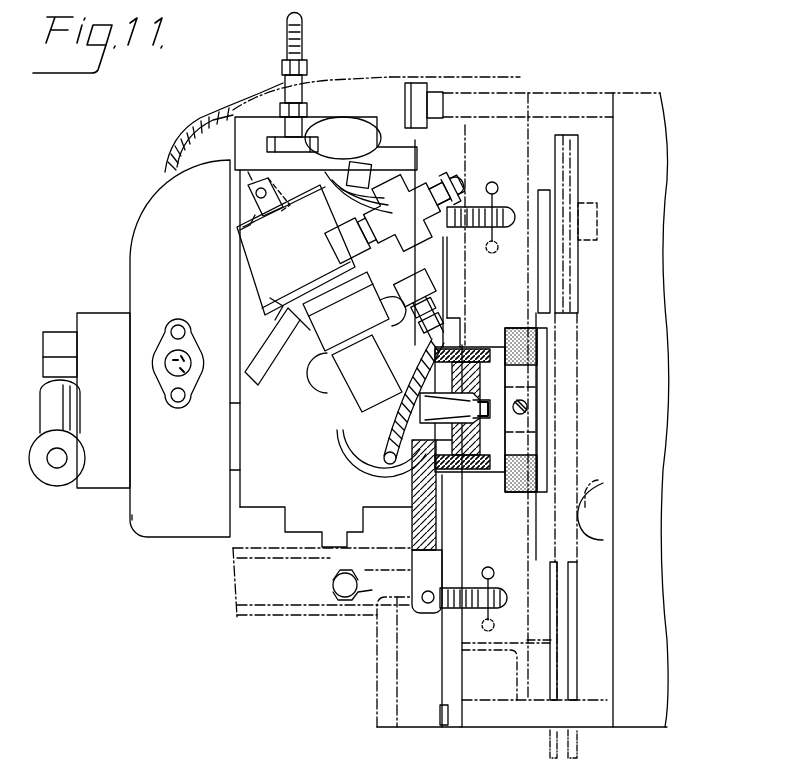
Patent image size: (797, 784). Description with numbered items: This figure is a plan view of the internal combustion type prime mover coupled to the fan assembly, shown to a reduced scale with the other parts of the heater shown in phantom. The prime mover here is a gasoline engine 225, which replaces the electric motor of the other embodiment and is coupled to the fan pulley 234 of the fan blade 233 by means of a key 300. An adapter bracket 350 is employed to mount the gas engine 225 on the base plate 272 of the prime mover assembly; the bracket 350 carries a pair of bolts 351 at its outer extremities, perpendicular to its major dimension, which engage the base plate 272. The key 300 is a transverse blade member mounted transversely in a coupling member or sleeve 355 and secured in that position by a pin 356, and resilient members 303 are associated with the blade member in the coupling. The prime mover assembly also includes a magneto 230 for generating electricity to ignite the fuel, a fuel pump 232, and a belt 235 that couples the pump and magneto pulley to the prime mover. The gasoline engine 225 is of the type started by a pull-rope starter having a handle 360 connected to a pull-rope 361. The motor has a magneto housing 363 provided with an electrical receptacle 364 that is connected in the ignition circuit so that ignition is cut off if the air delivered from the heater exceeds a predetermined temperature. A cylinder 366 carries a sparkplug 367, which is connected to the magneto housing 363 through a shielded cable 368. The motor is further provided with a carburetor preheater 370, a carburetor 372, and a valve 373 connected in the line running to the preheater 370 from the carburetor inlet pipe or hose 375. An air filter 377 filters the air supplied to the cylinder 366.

The gasoline engine 225 is at (148, 530).
The magneto 230 is at (530, 95).
The fuel pump 232 is at (377, 693).
The fan blade 233 is at (603, 487).
The fan pulley 234 is at (580, 513).
The belt 235 is at (573, 667).
The base plate 272 is at (450, 720).
The key 300 is at (532, 425).
The resilient members 303 is at (537, 350).
The adapter bracket 350 is at (413, 577).
The bolts 351 is at (503, 205).
The coupling member or sleeve 355 is at (483, 350).
The pin 356 is at (530, 405).
The handle 360 is at (33, 410).
The pull-rope 361 is at (60, 377).
The magneto housing 363 is at (150, 210).
The electrical receptacle 364 is at (170, 377).
The cylinder 366 is at (418, 177).
The sparkplug 367 is at (303, 127).
The shielded cable 368 is at (192, 125).
The carburetor preheater 370 is at (243, 243).
The carburetor 372 is at (327, 327).
The valve 373 is at (447, 193).
The carburetor inlet pipe or hose 375 is at (380, 460).
The air filter 377 is at (340, 443).